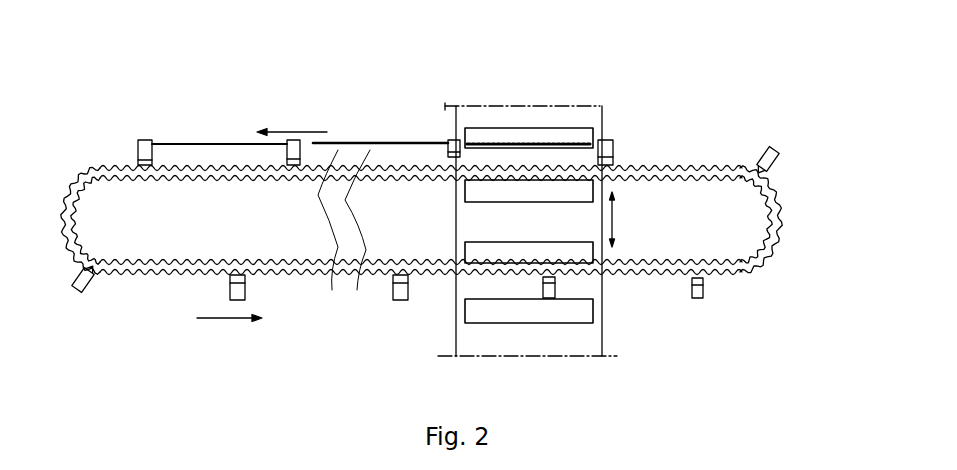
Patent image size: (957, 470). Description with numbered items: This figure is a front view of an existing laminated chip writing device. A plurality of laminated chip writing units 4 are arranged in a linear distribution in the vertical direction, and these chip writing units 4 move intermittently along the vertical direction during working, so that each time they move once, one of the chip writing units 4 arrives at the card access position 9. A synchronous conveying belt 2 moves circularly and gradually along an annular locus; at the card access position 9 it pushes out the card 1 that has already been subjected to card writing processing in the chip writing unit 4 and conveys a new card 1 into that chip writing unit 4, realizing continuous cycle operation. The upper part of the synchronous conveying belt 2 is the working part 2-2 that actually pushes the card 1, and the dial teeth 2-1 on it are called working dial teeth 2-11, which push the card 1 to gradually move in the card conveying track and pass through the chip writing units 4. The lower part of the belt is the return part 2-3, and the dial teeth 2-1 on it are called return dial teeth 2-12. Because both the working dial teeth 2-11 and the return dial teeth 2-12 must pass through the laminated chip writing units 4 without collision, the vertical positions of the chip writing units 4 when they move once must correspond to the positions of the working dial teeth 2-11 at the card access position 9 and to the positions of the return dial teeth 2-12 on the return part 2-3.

The card 1 is at (337, 143).
The synchronous conveying belt 2 is at (687, 170).
The dial teeth 2-1 is at (773, 153).
The working part 2-2 is at (392, 143).
The return part 2-3 is at (293, 278).
The working dial teeth 2-11 is at (615, 150).
The return dial teeth 2-12 is at (398, 293).
The chip writing unit 4 is at (537, 128).
The card access position 9 is at (608, 140).